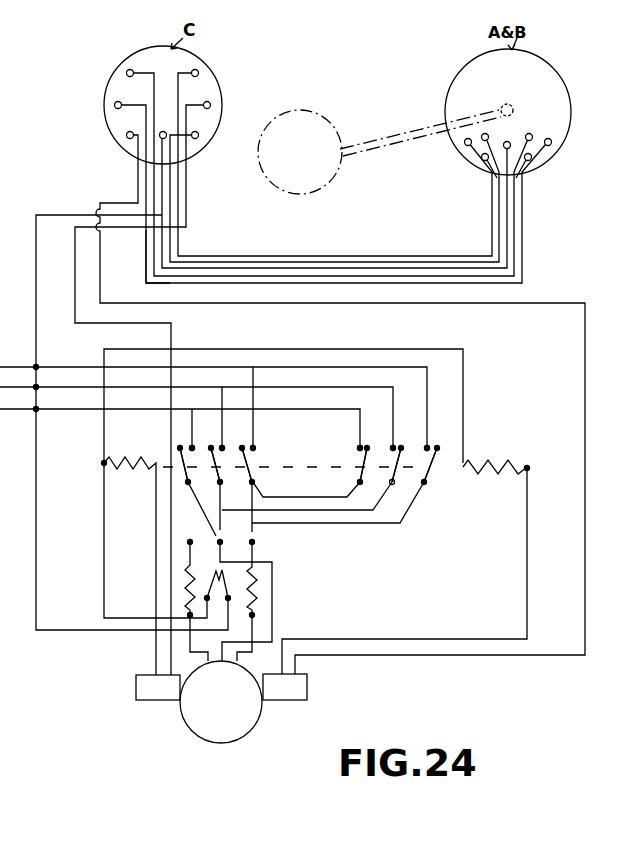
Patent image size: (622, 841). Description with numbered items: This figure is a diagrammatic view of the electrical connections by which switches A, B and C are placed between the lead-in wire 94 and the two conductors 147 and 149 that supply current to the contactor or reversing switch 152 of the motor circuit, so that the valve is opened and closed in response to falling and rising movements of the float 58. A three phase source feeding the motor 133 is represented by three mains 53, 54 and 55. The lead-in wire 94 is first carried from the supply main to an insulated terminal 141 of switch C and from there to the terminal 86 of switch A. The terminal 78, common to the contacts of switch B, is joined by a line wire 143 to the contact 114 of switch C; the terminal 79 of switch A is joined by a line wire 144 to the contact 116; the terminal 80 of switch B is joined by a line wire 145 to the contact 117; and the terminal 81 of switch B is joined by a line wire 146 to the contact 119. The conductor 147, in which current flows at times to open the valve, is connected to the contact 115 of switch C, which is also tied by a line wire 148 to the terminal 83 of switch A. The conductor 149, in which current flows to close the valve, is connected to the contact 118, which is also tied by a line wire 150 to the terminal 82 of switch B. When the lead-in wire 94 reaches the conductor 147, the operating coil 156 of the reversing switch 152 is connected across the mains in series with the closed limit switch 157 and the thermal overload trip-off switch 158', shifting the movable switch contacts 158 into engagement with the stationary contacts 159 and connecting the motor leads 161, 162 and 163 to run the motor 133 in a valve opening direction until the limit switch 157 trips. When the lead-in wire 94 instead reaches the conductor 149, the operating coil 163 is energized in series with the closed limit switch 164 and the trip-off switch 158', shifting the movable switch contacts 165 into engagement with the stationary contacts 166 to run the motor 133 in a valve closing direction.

The power line 53 is at (22, 366).
The power line 54 is at (18, 386).
The power line 55 is at (17, 409).
The float 58 is at (325, 184).
The terminal 78 is at (530, 160).
The terminal 79 is at (531, 134).
The terminal 80 is at (464, 143).
The terminal 81 is at (482, 158).
The terminal 82 is at (552, 142).
The terminal 83 is at (482, 140).
The terminal 86 is at (509, 142).
The lead-in wire 94 is at (284, 258).
The contact 114 is at (126, 73).
The contact 115 is at (114, 105).
The contact 116 is at (126, 135).
The contact 117 is at (198, 135).
The contact 118 is at (210, 105).
The contact 119 is at (198, 73).
The motor 133 is at (221, 642).
The insulated terminal 141 is at (166, 134).
The line wire 143 is at (523, 240).
The line wire 144 is at (515, 213).
The line wire 145 is at (500, 208).
The line wire 146 is at (494, 177).
The conductor 147 is at (216, 308).
The line wire 148 is at (182, 252).
The conductor 149 is at (137, 328).
The line wire 150 is at (146, 274).
The reversing switch 152 is at (318, 466).
The operating coil 156 is at (488, 465).
The limit switch 157 is at (298, 690).
The movable switch contacts 158 is at (430, 482).
The thermal overload trip-off switch 158' is at (271, 581).
The stationary contacts 159 is at (428, 446).
The motor lead 161 is at (254, 540).
The motor lead 162 is at (221, 540).
The operating coil 163 is at (132, 454).
The limit switch 164 is at (156, 698).
The movable switch contacts 165 is at (242, 457).
The stationary contacts 166 is at (253, 446).